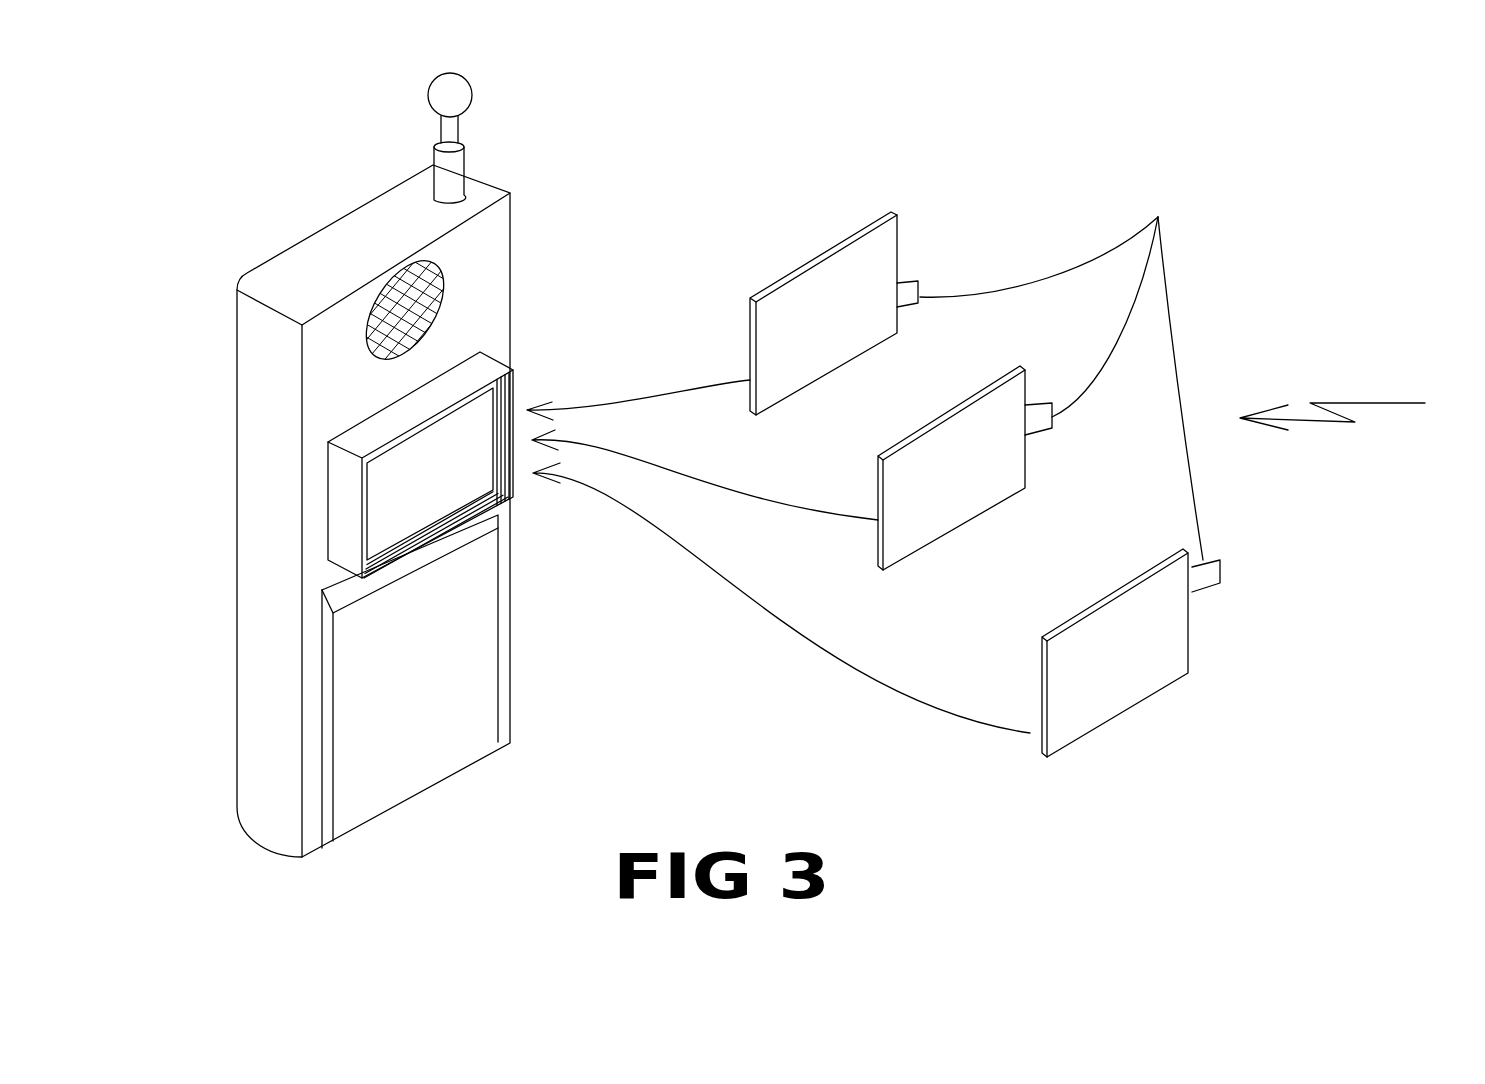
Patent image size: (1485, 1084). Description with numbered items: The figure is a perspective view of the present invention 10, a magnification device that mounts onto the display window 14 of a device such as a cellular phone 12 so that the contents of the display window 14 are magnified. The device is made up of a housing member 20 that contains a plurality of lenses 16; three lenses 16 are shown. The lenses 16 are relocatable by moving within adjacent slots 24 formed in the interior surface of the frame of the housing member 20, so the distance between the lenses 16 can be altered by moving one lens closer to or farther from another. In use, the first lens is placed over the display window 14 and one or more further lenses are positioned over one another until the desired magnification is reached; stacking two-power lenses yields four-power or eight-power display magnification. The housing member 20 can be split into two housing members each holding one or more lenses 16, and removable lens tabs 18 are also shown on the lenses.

The present invention 10 is at (1357, 408).
The cellular phone 12 is at (325, 252).
The display window 14 is at (357, 430).
The lenses 16 is at (810, 383).
The removable lens tabs 18 is at (1061, 369).
The housing member 20 is at (360, 445).
The slots 24 is at (510, 402).